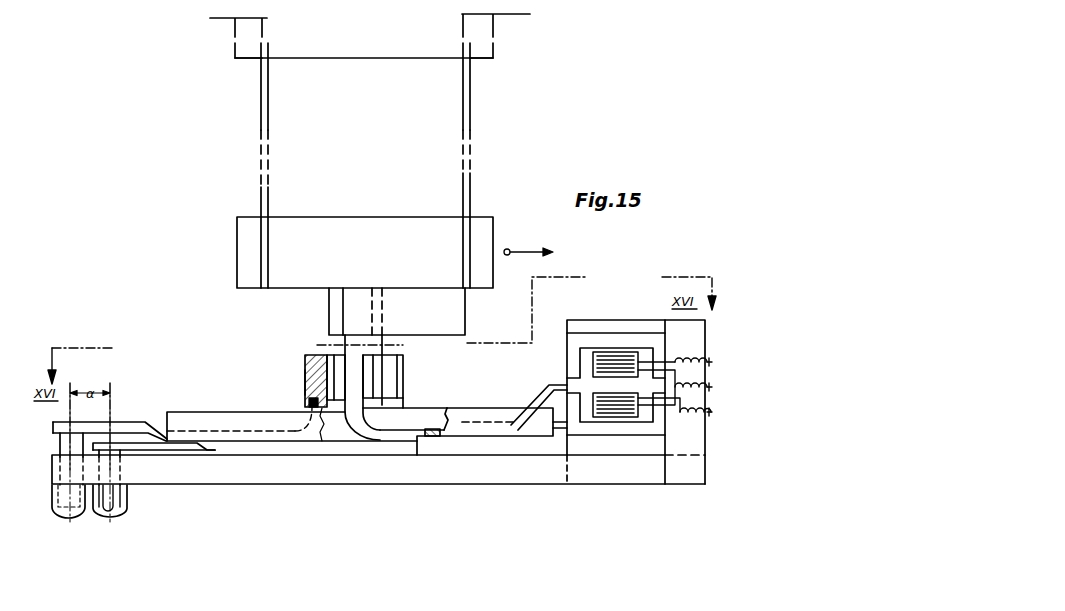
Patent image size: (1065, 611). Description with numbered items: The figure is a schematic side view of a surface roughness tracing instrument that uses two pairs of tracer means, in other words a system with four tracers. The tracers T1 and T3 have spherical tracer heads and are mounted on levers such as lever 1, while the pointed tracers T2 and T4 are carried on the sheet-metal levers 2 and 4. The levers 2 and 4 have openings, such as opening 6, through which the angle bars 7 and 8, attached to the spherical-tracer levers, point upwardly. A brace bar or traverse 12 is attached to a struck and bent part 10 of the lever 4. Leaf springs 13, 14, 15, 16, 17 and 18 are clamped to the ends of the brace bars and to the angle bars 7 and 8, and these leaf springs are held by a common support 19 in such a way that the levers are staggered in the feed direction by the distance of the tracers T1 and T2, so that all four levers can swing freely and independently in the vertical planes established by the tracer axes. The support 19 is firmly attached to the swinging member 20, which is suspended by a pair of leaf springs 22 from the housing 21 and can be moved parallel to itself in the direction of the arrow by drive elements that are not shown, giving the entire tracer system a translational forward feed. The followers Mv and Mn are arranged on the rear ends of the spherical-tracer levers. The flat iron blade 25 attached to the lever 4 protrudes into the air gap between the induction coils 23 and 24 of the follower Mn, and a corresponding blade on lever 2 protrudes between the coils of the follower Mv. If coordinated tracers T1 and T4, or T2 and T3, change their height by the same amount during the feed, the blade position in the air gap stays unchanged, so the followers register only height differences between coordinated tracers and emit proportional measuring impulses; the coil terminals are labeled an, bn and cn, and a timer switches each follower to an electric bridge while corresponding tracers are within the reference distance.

The lever 1 is at (295, 470).
The lever 2 is at (137, 446).
The lever 4 is at (192, 425).
The opening 6 is at (336, 442).
The angle bar 7 is at (402, 442).
The angle bar 8 is at (404, 394).
The struck and bent part 10 is at (310, 402).
The brace bar 12 is at (305, 382).
The leaf spring 13 is at (433, 380).
The leaf spring 14 is at (433, 380).
The leaf spring 15 is at (286, 380).
The leaf spring 16 is at (286, 380).
The leaf spring 17 is at (384, 368).
The leaf spring 18 is at (340, 362).
The common support 19 is at (450, 322).
The swinging member 20 is at (483, 230).
The housing 21 is at (496, 42).
The leaf springs 22 is at (470, 97).
The induction coil 23 is at (637, 358).
The induction coil 24 is at (605, 410).
The flat iron blade 25 is at (540, 402).
The tracer T1 is at (62, 520).
The tracer T2 is at (100, 518).
The tracer T3 is at (116, 514).
The tracer T4 is at (77, 447).
The follower Mn is at (653, 428).
The follower Mv is at (697, 463).
The winding terminal a an is at (675, 350).
The winding terminal b bn is at (675, 404).
The winding terminal c cn is at (675, 385).